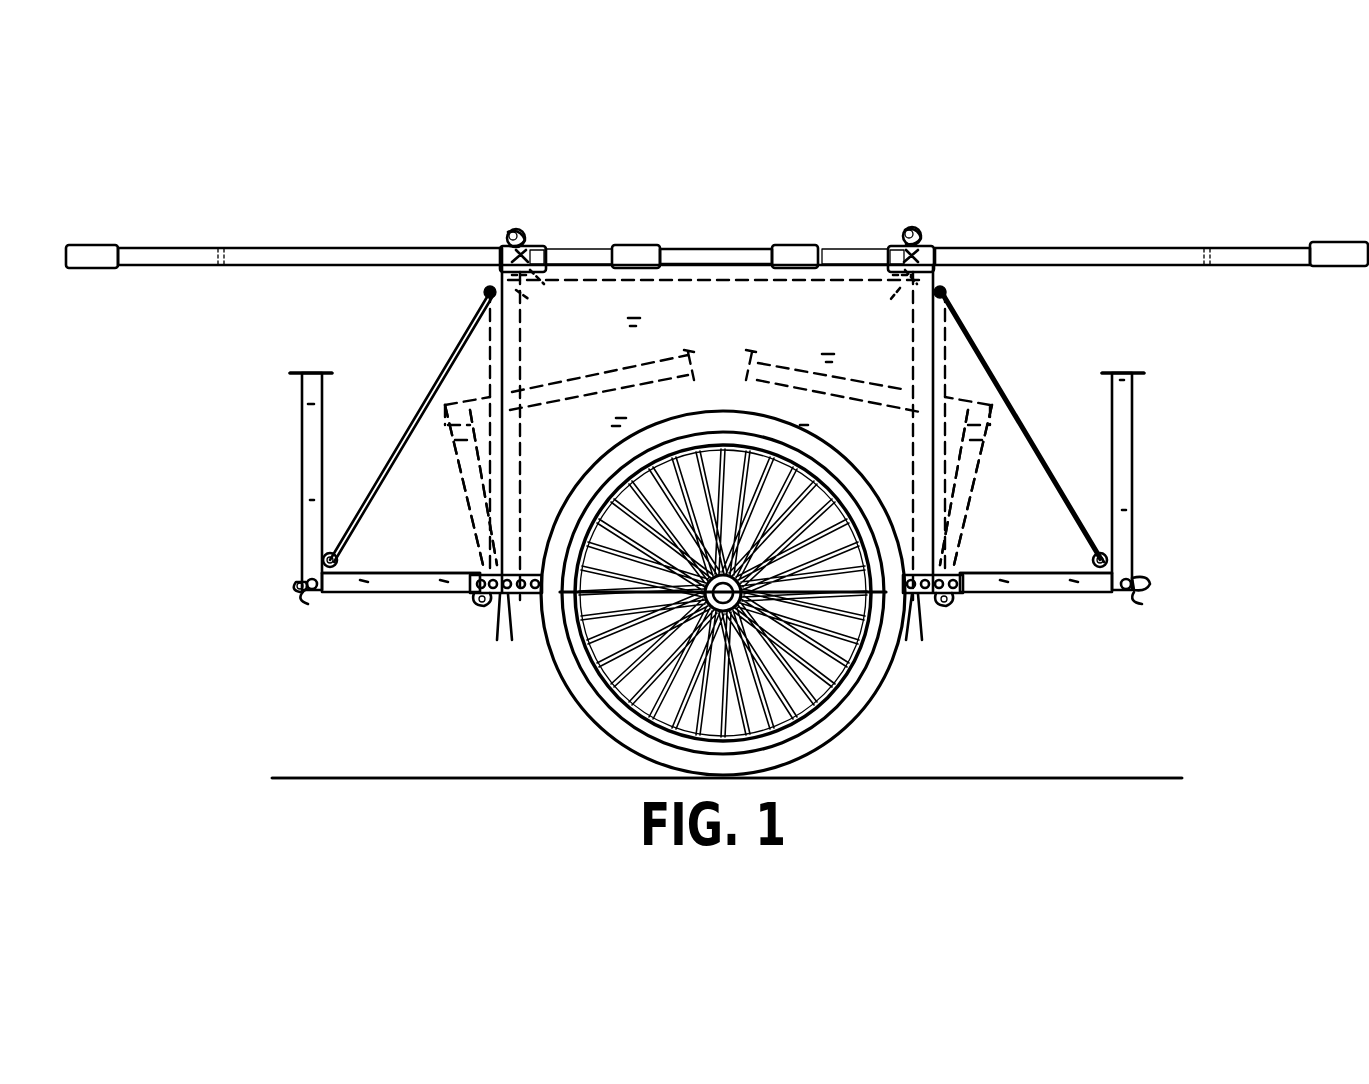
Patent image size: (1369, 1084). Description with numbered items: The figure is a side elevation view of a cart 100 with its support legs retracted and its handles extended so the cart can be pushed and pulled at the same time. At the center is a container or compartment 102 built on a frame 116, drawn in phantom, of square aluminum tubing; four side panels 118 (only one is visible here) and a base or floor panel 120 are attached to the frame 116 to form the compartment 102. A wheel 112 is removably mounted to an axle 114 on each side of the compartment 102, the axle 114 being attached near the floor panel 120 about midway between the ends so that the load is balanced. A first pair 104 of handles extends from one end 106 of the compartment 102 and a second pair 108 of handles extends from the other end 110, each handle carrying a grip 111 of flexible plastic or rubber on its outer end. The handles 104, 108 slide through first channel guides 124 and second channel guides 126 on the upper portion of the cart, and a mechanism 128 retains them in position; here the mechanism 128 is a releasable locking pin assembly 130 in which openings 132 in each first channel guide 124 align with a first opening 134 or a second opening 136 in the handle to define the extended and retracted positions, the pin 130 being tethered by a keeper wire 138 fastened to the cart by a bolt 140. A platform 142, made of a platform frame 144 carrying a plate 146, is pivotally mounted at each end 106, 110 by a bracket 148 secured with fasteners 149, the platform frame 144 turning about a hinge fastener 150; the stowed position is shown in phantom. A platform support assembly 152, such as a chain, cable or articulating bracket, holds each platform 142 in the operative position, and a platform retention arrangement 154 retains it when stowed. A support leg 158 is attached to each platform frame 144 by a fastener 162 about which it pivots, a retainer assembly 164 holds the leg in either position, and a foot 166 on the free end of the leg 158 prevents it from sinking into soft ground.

The cart 100 is at (704, 152).
The compartment 102 is at (720, 250).
The first pair of handles 104 is at (302, 246).
The one end of the compartment 106 is at (490, 270).
The second pair of handles 108 is at (1240, 248).
The another end of the compartment 110 is at (946, 272).
The grip 111 is at (95, 256).
The wheel 112 is at (800, 774).
The axle 114 is at (624, 664).
The frame 116 is at (524, 442).
The side panel 118 is at (748, 333).
The floor panel 120 is at (818, 600).
The first channel guide 124 is at (502, 256).
The second channel guide 126 is at (636, 246).
The mechanism 128 is at (515, 228).
The releasable locking pin 130 is at (505, 238).
The opening in first channel guide 132 is at (532, 290).
The first opening 134 is at (538, 276).
The second opening 136 is at (220, 266).
The keeper wire 138 is at (521, 236).
The bolt 140 is at (542, 260).
The platform 142 is at (458, 468).
The platform frame 144 is at (380, 594).
The plate 146 is at (434, 572).
The bracket 148 is at (498, 600).
The fastener 149 is at (521, 600).
The fastener 150 is at (490, 604).
The platform support assembly 152 is at (414, 406).
The platform retention arrangement 154 is at (516, 562).
The support leg 158 is at (302, 438).
The fastener 162 is at (306, 598).
The retainer assembly 164 is at (290, 580).
The foot 166 is at (300, 372).